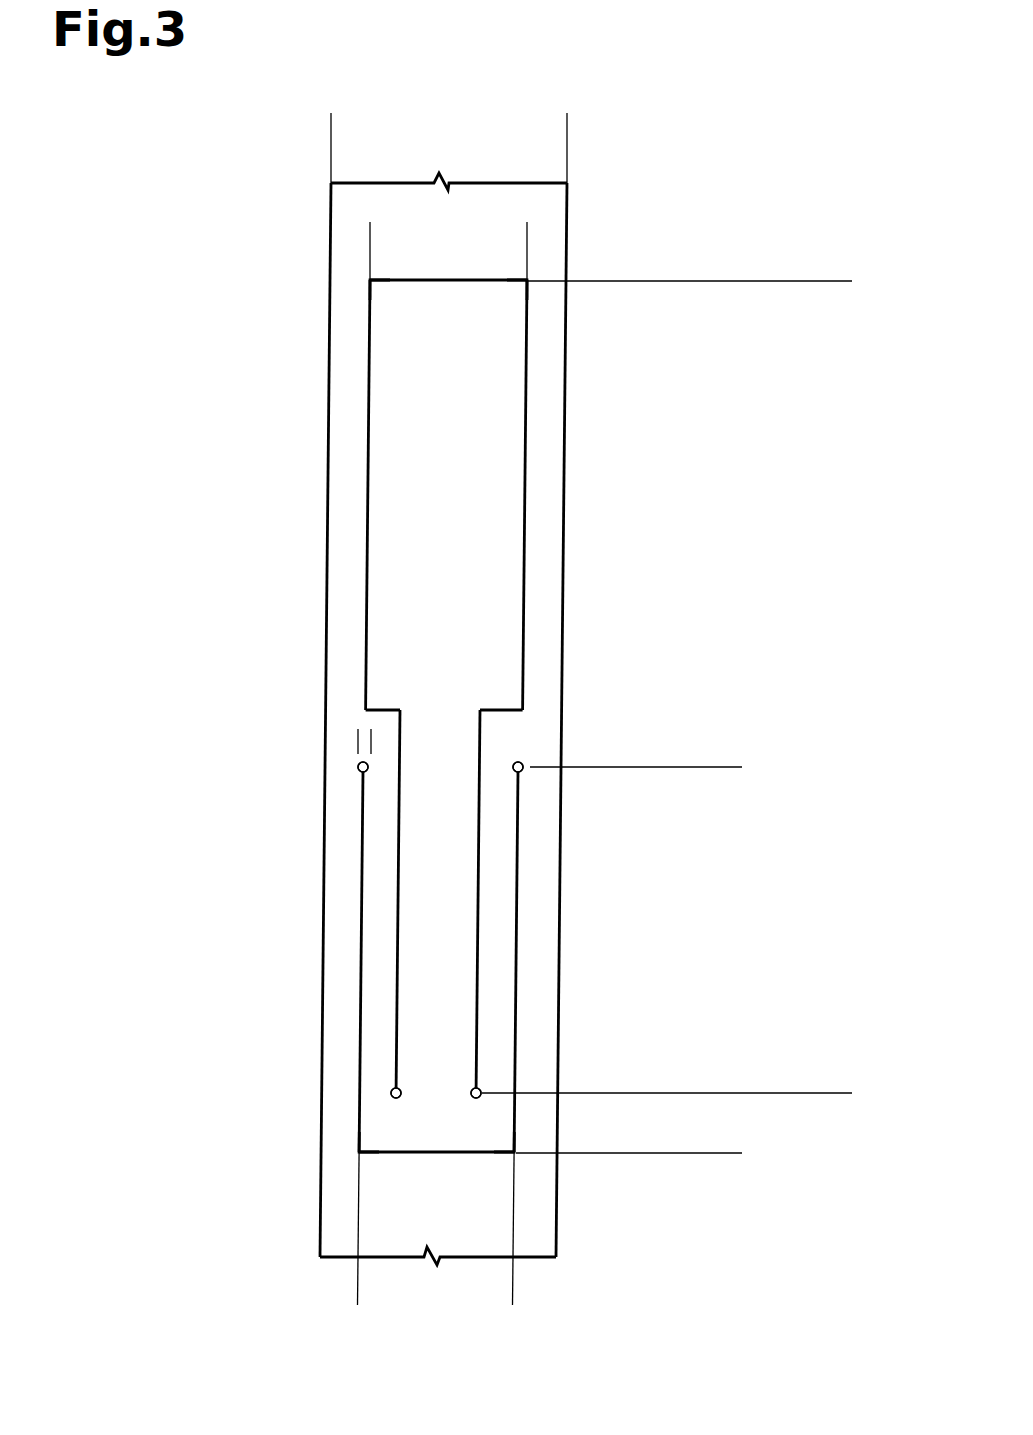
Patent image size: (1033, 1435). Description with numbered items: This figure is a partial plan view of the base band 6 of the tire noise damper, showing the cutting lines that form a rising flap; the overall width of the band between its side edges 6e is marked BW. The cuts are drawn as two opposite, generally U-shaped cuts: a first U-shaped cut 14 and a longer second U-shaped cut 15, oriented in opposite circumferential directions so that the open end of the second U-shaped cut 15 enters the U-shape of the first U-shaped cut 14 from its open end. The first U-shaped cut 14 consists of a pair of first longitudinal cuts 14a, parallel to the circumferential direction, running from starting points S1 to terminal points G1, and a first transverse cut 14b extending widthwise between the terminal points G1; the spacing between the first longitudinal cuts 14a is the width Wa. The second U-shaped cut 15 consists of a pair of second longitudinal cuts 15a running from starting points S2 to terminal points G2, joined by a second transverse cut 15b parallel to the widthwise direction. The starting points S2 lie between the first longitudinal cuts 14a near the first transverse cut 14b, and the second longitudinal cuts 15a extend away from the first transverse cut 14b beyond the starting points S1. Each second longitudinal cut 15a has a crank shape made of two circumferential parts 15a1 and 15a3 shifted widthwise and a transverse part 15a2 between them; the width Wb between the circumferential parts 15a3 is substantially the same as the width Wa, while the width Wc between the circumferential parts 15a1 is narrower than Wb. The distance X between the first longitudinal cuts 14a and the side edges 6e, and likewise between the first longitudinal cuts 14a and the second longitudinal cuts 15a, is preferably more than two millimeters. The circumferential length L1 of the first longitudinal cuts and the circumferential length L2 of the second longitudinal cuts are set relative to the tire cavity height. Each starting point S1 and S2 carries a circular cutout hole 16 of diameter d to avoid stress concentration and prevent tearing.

The base band 6 is at (458, 687).
The side edges of the base band 6e is at (330, 228).
The terminal points of the second longitudinal cuts G2 is at (370, 280).
The second U-shaped cut 15 is at (578, 684).
The second longitudinal cuts 15a is at (552, 684).
The circumferential part of the second longitudinal cut 15a1 is at (402, 723).
The transverse part of the second longitudinal cut 15a2 is at (378, 706).
The circumferential part of the second longitudinal cut 15a3 is at (368, 577).
The second transverse cut 15b is at (480, 282).
The circular cutout hole 16 is at (358, 766).
The starting points of the first longitudinal cuts S1 is at (359, 764).
The starting points of the second longitudinal cuts S2 is at (391, 1091).
The first U-shaped cut 14 is at (323, 1032).
The first longitudinal cuts 14a is at (360, 1113).
The first transverse cut 14b is at (385, 1153).
The terminal points of the first longitudinal cuts G1 is at (358, 1153).
The overall width BW is at (567, 122).
The width between the circumferential parts 15a3 Wb is at (527, 232).
The width between the circumferential parts 15a1 Wc is at (480, 842).
The width between the first longitudinal cuts Wa is at (513, 1298).
The diameter of the cutout hole d is at (397, 737).
The distance X is at (383, 935).
The circumferential length of the first longitudinal cuts L1 is at (732, 1153).
The circumferential length of the second longitudinal cuts L2 is at (842, 1093).